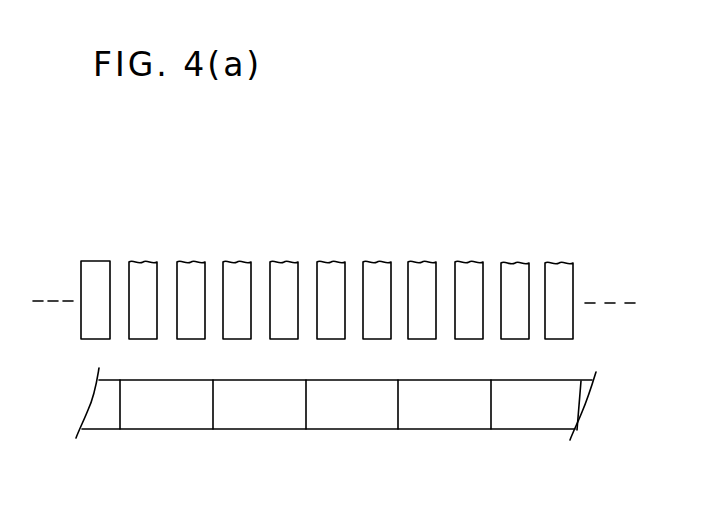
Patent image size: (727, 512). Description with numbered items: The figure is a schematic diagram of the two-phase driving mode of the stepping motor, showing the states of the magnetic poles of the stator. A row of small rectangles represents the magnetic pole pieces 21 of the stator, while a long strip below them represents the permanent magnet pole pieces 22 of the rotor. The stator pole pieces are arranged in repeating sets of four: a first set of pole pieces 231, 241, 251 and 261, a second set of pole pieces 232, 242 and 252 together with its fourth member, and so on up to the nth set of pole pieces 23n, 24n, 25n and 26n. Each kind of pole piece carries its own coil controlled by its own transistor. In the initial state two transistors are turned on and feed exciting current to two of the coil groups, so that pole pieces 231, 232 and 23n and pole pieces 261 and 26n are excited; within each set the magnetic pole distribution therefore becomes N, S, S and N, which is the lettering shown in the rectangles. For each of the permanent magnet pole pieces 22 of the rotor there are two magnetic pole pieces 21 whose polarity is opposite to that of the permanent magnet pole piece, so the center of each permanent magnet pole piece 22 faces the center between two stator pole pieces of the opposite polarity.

The magnetic pole pieces of the stator 21 is at (587, 287).
The permanent magnet pole pieces of the rotor 22 is at (596, 372).
The pole piece 23n is at (95, 272).
The pole piece 24n is at (148, 262).
The pole piece 25n is at (193, 262).
The pole piece 26n is at (242, 262).
The pole piece 231 is at (285, 262).
The pole piece 241 is at (332, 262).
The pole piece 251 is at (378, 262).
The pole piece 261 is at (423, 262).
The pole piece 232 is at (473, 262).
The pole piece 242 is at (515, 263).
The pole piece 252 is at (562, 263).